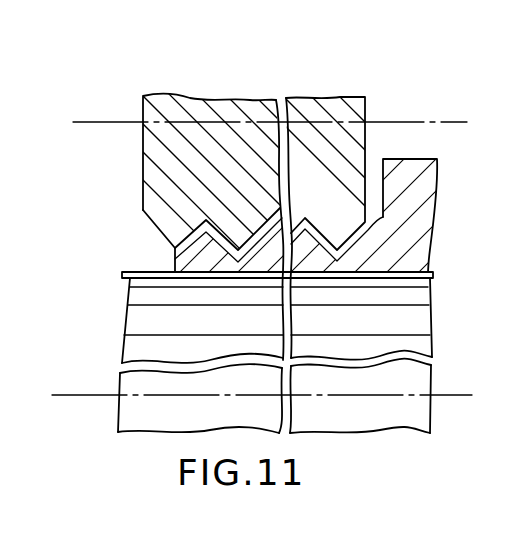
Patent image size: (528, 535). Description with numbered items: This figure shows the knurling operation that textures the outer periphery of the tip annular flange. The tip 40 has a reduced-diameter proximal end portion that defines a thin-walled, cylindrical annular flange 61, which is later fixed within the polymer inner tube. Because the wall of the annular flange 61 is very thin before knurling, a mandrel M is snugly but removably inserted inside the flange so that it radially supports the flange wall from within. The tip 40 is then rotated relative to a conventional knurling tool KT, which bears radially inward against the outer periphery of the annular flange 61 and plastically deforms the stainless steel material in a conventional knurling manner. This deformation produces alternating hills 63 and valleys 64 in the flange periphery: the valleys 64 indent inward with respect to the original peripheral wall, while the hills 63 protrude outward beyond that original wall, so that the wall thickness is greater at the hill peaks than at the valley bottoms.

The knurling tool KT is at (143, 173).
The hills 63 is at (206, 220).
The valleys 64 is at (238, 248).
The tip 40 is at (420, 158).
The annular flange 61 is at (320, 258).
The mandrel M is at (143, 320).